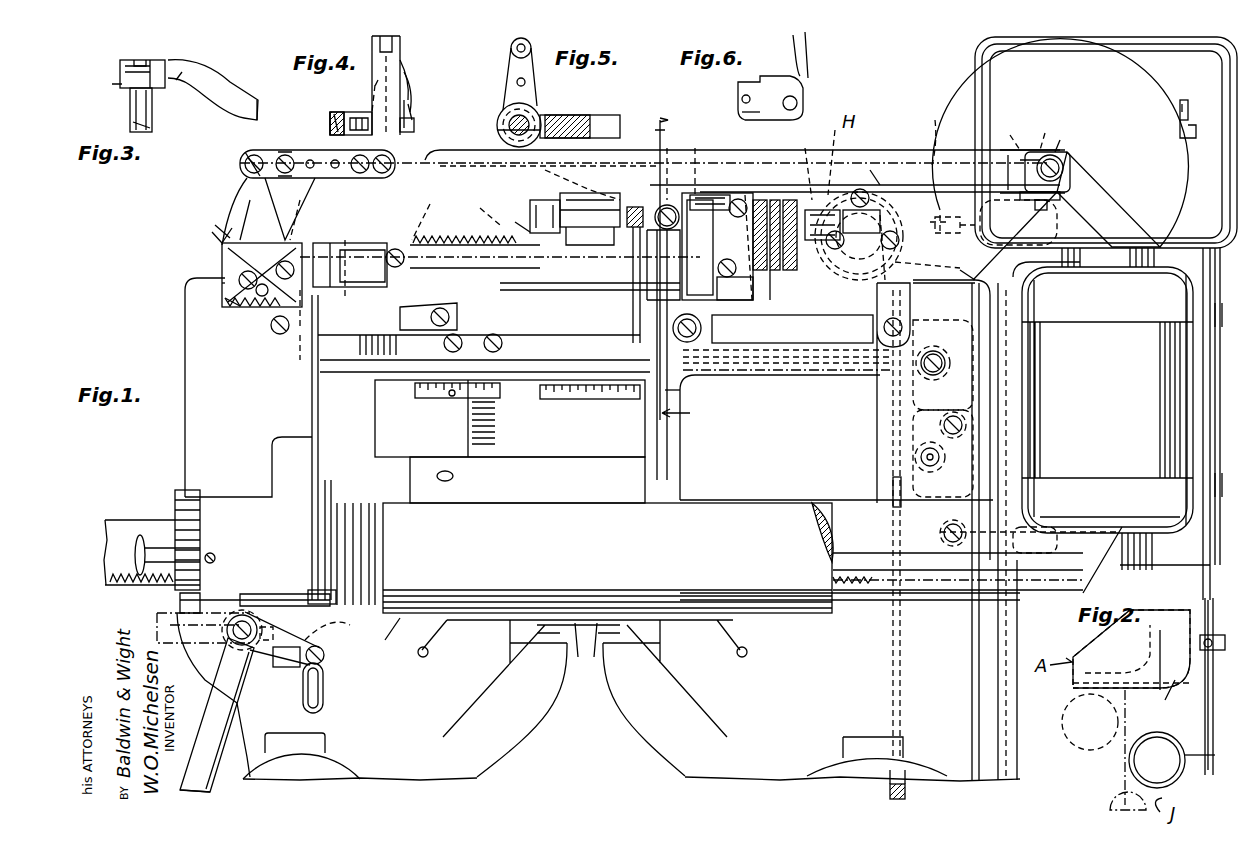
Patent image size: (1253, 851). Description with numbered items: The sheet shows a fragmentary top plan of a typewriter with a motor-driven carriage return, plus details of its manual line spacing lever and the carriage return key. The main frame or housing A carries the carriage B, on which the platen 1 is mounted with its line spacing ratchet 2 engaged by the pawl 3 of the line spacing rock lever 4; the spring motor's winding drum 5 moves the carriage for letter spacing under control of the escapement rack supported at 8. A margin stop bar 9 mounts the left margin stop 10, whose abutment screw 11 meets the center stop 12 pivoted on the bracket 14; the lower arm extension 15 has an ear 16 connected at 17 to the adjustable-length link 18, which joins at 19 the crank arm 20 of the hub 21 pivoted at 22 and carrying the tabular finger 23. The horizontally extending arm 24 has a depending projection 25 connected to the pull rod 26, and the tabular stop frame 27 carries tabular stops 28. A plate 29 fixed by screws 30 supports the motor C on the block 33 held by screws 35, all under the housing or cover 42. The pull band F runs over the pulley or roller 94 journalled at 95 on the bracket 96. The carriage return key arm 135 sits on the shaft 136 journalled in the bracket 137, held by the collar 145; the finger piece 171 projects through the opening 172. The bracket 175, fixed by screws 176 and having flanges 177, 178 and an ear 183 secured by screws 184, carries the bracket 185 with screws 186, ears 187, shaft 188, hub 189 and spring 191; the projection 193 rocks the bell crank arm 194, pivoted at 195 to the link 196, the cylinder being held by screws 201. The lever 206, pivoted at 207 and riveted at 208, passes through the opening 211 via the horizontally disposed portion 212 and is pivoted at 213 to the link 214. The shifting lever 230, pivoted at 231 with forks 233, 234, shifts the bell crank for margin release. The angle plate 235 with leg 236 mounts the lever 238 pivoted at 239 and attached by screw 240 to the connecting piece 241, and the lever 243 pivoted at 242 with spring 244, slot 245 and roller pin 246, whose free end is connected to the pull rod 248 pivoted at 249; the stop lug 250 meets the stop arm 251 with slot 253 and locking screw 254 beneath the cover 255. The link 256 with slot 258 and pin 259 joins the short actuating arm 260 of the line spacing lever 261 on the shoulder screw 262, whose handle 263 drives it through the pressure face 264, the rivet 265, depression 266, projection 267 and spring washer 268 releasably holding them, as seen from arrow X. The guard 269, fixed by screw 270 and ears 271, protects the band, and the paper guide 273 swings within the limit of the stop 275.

In FIG. 1, the platen 1 is at (608, 558).
In FIG. 1, the line spacing ratchet 2 is at (342, 520).
In FIG. 1, the pawl 3 is at (340, 570).
In FIG. 1, the line spacing rock lever 4 is at (340, 548).
In FIG. 3, the winding drum 5 is at (110, 84).
In FIG. 1, the escapement rack support 8 is at (674, 262).
In FIG. 1, the margin stop bar 9 is at (350, 356).
In FIG. 1, the left margin stop 10 is at (430, 356).
In FIG. 1, the adjustable abutment screw 11 is at (432, 307).
In FIG. 1, the center stop 12 is at (596, 290).
In FIG. 1, the bracket 14 is at (545, 236).
In FIG. 1, the lower arm extension 15 is at (612, 398).
In FIG. 1, the ear 16 is at (684, 389).
In FIG. 1, the pivot connection 17 is at (703, 326).
In FIG. 1, the adjustable-length link 18 is at (606, 283).
In FIG. 1, the pivot 19 is at (660, 205).
In FIG. 1, the crank arm 20 is at (626, 213).
In FIG. 1, the hub 21 is at (600, 240).
In FIG. 1, the hub pivot 22 is at (521, 217).
In FIG. 1, the tabular finger 23 is at (590, 198).
In FIG. 1, the horizontally extending arm 24 is at (632, 400).
In FIG. 1, the depending projection 25 is at (933, 347).
In FIG. 1, the pull rod 26 is at (885, 449).
In FIG. 1, the tabular stop frame 27 is at (370, 250).
In FIG. 1, the tabular stops 28 is at (445, 236).
In FIG. 1, the plate 29 is at (1210, 258).
In FIG. 1, the screws 30 is at (934, 422).
In FIG. 1, the block 33 is at (1195, 372).
In FIG. 1, the screws 35 is at (1210, 305).
In FIG. 1, the housing or cover 42 is at (1084, 142).
In FIG. 1, the pulley or roller 94 is at (1011, 133).
In FIG. 1, the journal 95 is at (1071, 136).
In FIG. 1, the bracket 96 is at (1046, 133).
In FIG. 2, the arm 135 is at (1182, 748).
In FIG. 2, the shaft 136 is at (1184, 782).
In FIG. 2, the bracket 137 is at (1178, 695).
In FIG. 2, the collar 145 is at (1185, 643).
In FIG. 1, the finger piece 171 is at (1190, 98).
In FIG. 1, the opening 172 is at (1180, 128).
In FIG. 1, the bracket 175 is at (1030, 272).
In FIG. 1, the screws 176 is at (885, 332).
In FIG. 1, the flange 177 is at (1018, 222).
In FIG. 1, the flange 178 is at (795, 200).
In FIG. 1, the ear 183 is at (1058, 196).
In FIG. 1, the screws 184 is at (1043, 210).
In FIG. 1, the bracket 185 is at (792, 328).
In FIG. 1, the screws 186 is at (770, 148).
In FIG. 1, the ears 187 is at (750, 195).
In FIG. 1, the shaft 188 is at (696, 163).
In FIG. 1, the hub 189 is at (735, 288).
In FIG. 1, the spring 191 is at (712, 195).
In FIG. 1, the projection 193 is at (578, 398).
In FIG. 1, the arm 194 is at (835, 250).
In FIG. 1, the pivot 195 is at (892, 171).
In FIG. 1, the link 196 is at (859, 234).
In FIG. 1, the screws 201 is at (858, 280).
In FIG. 1, the lever 206 is at (927, 271).
In FIG. 1, the pivots 207 is at (900, 135).
In FIG. 1, the rivets 208 is at (808, 238).
In FIG. 1, the opening 211 is at (777, 278).
In FIG. 1, the horizontally disposed portion 212 is at (803, 165).
In FIG. 1, the pivot 213 is at (976, 271).
In FIG. 1, the link 214 is at (978, 228).
In FIG. 1, the shifting lever 230 is at (661, 165).
In FIG. 1, the pivot 231 is at (672, 205).
In FIG. 1, the fork 233 is at (717, 246).
In FIG. 1, the fork 234 is at (605, 195).
In FIG. 1, the angle plate 235 is at (222, 248).
In FIG. 1, the leg 236 is at (300, 345).
In FIG. 1, the lever 238 is at (240, 165).
In FIG. 1, the pivot 239 is at (300, 262).
In FIG. 1, the screw 240 is at (256, 153).
In FIG. 1, the connecting piece 241 is at (291, 154).
In FIG. 1, the pivot 242 is at (240, 278).
In FIG. 1, the lever 243 is at (278, 334).
In FIG. 1, the spring 244 is at (258, 302).
In FIG. 1, the slot 245 is at (222, 285).
In FIG. 1, the roller pin 246 is at (238, 308).
In FIG. 1, the pull rod or link 248 is at (312, 422).
In FIG. 1, the pivot 249 is at (309, 590).
In FIG. 1, the stop lug 250 is at (218, 205).
In FIG. 1, the stop arm 251 is at (355, 235).
In FIG. 1, the slot 253 is at (300, 185).
In FIG. 1, the locking screw 254 is at (305, 212).
In FIG. 1, the cover 255 is at (222, 240).
In FIG. 1, the link 256 is at (337, 628).
In FIG. 1, the slot 258 is at (325, 688).
In FIG. 1, the pin 259 is at (326, 655).
In FIG. 3, the short actuating arm member 260 is at (128, 92).
In FIG. 4, the short actuating arm member 260 is at (380, 76).
In FIG. 5, the short actuating arm member 260 is at (535, 108).
In FIG. 1, the short actuating arm member 260 is at (282, 668).
In FIG. 3, the line spacing lever 261 is at (202, 73).
In FIG. 1, the line spacing lever 261 is at (268, 680).
In FIG. 3, the shoulder screw 262 is at (136, 58).
In FIG. 4, the shoulder screw 262 is at (414, 127).
In FIG. 1, the shoulder screw 262 is at (242, 614).
In FIG. 3, the handle 263 is at (242, 100).
In FIG. 4, the handle 263 is at (411, 98).
In FIG. 5, the handle 263 is at (604, 116).
In FIG. 6, the handle 263 is at (806, 42).
In FIG. 1, the handle 263 is at (200, 792).
In FIG. 3, the pressure face 264 is at (152, 60).
In FIG. 5, the pressure face 264 is at (508, 130).
In FIG. 6, the pressure face 264 is at (798, 82).
In FIG. 1, the pressure face 264 is at (232, 690).
In FIG. 4, the rivet 265 is at (375, 100).
In FIG. 5, the rivet 265 is at (527, 86).
In FIG. 4, the depression 266 is at (402, 76).
In FIG. 6, the depression 266 is at (742, 97).
In FIG. 1, the depression 266 is at (400, 628).
In FIG. 4, the projection 267 is at (409, 86).
In FIG. 6, the projection 267 is at (742, 110).
In FIG. 1, the projection 267 is at (280, 625).
In FIG. 3, the spring washer 268 is at (120, 70).
In FIG. 4, the spring washer 268 is at (410, 114).
In FIG. 1, the guard 269 is at (485, 210).
In FIG. 1, the screw 270 is at (1065, 170).
In FIG. 1, the ears 271 is at (574, 178).
In FIG. 1, the paper guide 273 is at (1140, 205).
In FIG. 1, the stop 275 is at (1025, 180).
In FIG. 1, the main frame or housing A is at (880, 788).
In FIG. 1, the carriage B is at (300, 394).
In FIG. 1, the motor C is at (1107, 400).
In FIG. 1, the pull band F is at (650, 160).
In FIG. 1, the arrow X is at (172, 612).